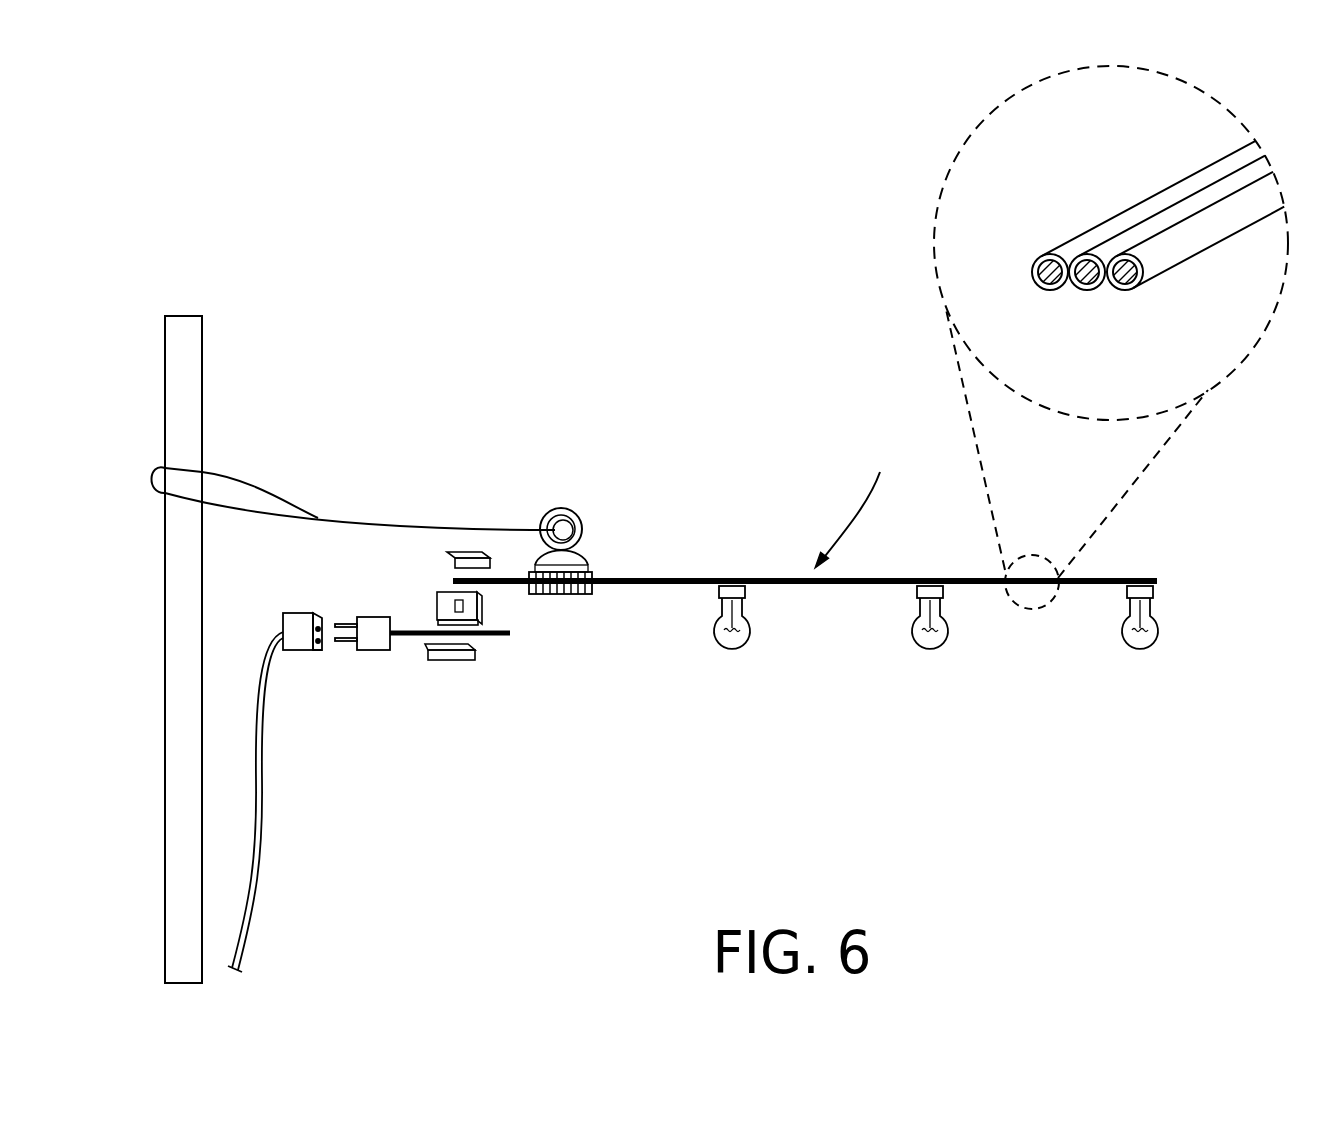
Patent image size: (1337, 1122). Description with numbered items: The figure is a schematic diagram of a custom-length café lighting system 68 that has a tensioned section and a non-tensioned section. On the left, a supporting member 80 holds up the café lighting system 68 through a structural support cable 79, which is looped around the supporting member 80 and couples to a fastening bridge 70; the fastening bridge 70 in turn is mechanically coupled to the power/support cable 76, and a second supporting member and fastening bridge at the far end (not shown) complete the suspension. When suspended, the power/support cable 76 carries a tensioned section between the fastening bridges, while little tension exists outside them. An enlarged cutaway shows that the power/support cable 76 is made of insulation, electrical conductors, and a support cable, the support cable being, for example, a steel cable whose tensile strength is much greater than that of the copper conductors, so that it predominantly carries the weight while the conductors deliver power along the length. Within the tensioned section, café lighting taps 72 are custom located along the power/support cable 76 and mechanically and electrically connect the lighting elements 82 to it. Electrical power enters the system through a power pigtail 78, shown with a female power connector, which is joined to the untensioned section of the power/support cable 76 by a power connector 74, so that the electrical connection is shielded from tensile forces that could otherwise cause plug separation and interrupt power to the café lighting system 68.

The café lighting system 68 is at (855, 504).
The fastening bridge 70 is at (558, 509).
The café lighting tap 72 is at (733, 592).
The power connector 74 is at (490, 560).
The power/support cable 76 is at (656, 578).
The power pigtail 78 is at (418, 631).
The structural support cable 79 is at (357, 518).
The supporting member 80 is at (203, 360).
The lighting element 82 is at (741, 647).